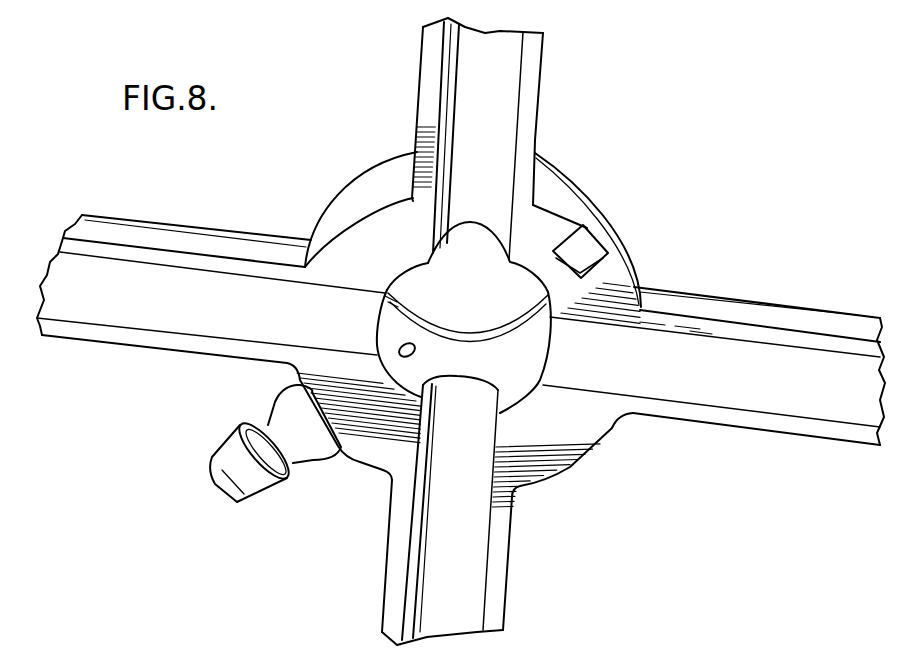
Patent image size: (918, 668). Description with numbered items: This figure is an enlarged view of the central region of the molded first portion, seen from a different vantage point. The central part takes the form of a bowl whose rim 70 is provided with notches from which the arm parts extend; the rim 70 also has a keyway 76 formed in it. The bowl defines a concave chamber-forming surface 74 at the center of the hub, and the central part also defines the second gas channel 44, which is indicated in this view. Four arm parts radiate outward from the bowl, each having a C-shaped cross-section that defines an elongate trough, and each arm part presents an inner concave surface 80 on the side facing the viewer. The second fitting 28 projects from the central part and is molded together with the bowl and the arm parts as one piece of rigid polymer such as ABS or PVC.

The rim 70 is at (388, 251).
The inner concave surface 80 is at (496, 145).
The concave chamber-forming surface 74 is at (484, 294).
The second gas channel 44 is at (416, 348).
The keyway 76 is at (585, 248).
The second fitting 28 is at (268, 425).